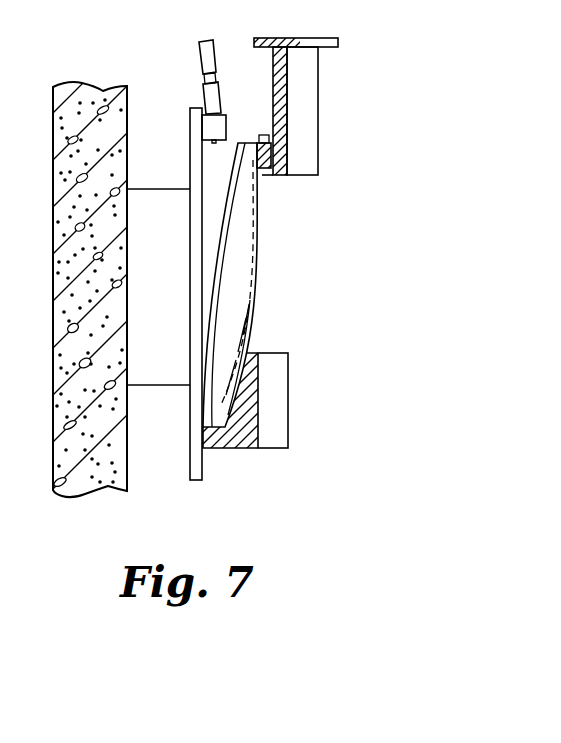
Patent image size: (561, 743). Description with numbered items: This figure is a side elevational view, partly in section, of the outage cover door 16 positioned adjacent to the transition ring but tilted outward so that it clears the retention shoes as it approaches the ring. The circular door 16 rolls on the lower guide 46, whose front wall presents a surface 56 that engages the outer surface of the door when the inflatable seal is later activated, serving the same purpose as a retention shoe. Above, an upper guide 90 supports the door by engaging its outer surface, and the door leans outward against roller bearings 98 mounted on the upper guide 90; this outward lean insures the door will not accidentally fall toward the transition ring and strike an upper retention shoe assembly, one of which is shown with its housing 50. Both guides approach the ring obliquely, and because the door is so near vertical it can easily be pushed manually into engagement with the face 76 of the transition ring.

The door 16 is at (243, 286).
The guide 46 is at (243, 447).
The housing 50 is at (208, 128).
The surface 56 is at (240, 337).
The face 76 is at (202, 215).
The upper guide 90 is at (300, 96).
The roller bearings 98 is at (280, 163).